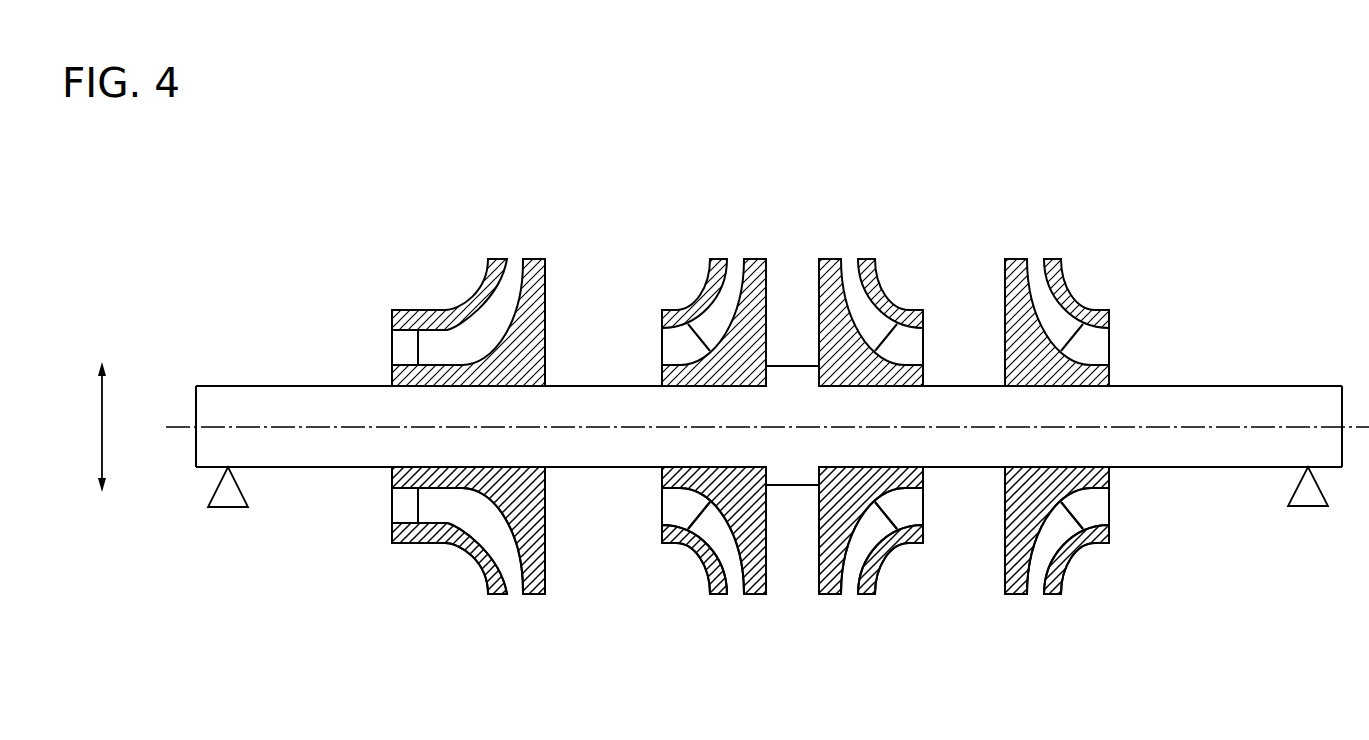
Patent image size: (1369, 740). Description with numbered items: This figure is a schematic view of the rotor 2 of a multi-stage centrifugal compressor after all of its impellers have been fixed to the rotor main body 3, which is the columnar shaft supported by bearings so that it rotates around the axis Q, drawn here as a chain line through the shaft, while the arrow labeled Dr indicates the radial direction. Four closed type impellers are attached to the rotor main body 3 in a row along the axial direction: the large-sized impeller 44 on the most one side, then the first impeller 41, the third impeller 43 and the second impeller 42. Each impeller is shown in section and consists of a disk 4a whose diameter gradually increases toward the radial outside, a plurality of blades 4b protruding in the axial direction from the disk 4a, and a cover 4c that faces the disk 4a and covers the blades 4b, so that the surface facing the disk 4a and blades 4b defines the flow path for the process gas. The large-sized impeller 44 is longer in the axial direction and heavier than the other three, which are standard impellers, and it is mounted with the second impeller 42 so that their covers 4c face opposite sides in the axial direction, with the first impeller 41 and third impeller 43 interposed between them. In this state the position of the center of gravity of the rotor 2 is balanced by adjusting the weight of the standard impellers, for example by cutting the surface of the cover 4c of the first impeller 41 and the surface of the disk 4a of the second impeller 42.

The rotor 2 is at (1201, 407).
The rotor main body 3 is at (290, 385).
The first impeller 41 is at (693, 291).
The second impeller 42 is at (1081, 291).
The third impeller 43 is at (893, 291).
The large-sized impeller 44 is at (423, 303).
The disk 4a is at (433, 541).
The blade 4b is at (507, 558).
The cover 4c is at (537, 542).
The axis Q is at (180, 420).
The radial direction Dr is at (84, 427).